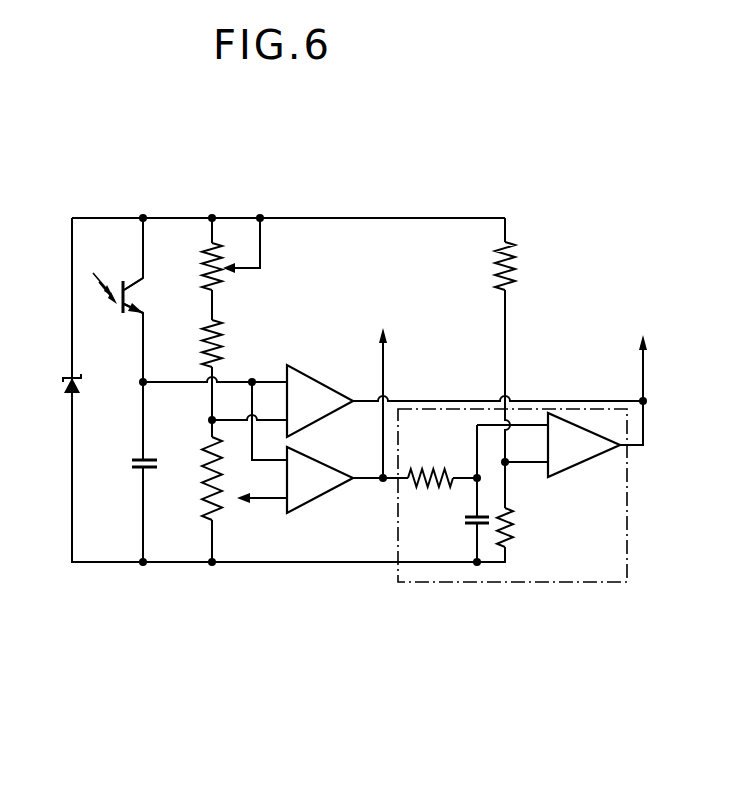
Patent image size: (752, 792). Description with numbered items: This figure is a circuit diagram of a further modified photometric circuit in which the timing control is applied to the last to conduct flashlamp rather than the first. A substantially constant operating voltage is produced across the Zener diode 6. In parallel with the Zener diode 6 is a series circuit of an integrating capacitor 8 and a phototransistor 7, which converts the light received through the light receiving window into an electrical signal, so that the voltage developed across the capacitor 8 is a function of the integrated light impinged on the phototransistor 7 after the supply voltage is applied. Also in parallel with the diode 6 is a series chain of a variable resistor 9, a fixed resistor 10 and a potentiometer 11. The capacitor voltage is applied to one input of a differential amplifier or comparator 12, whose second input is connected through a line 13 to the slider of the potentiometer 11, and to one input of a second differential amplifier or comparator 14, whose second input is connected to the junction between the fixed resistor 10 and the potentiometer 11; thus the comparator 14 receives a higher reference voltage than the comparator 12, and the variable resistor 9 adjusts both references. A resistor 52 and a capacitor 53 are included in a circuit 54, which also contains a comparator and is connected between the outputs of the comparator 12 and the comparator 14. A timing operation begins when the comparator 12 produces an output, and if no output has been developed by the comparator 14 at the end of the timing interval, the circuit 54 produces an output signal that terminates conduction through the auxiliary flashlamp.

The Zener diode 6 is at (65, 396).
The phototransistor 7 is at (131, 319).
The integrating capacitor 8 is at (140, 459).
The variable resistor 9 is at (200, 268).
The fixed resistor 10 is at (202, 353).
The potentiometer 11 is at (209, 492).
The differential amplifier or comparator 12 is at (331, 499).
The line 13 is at (258, 501).
The second differential amplifier or comparator 14 is at (325, 376).
The resistor 52 is at (433, 470).
The capacitor 53 is at (470, 520).
The circuit 54 is at (548, 584).